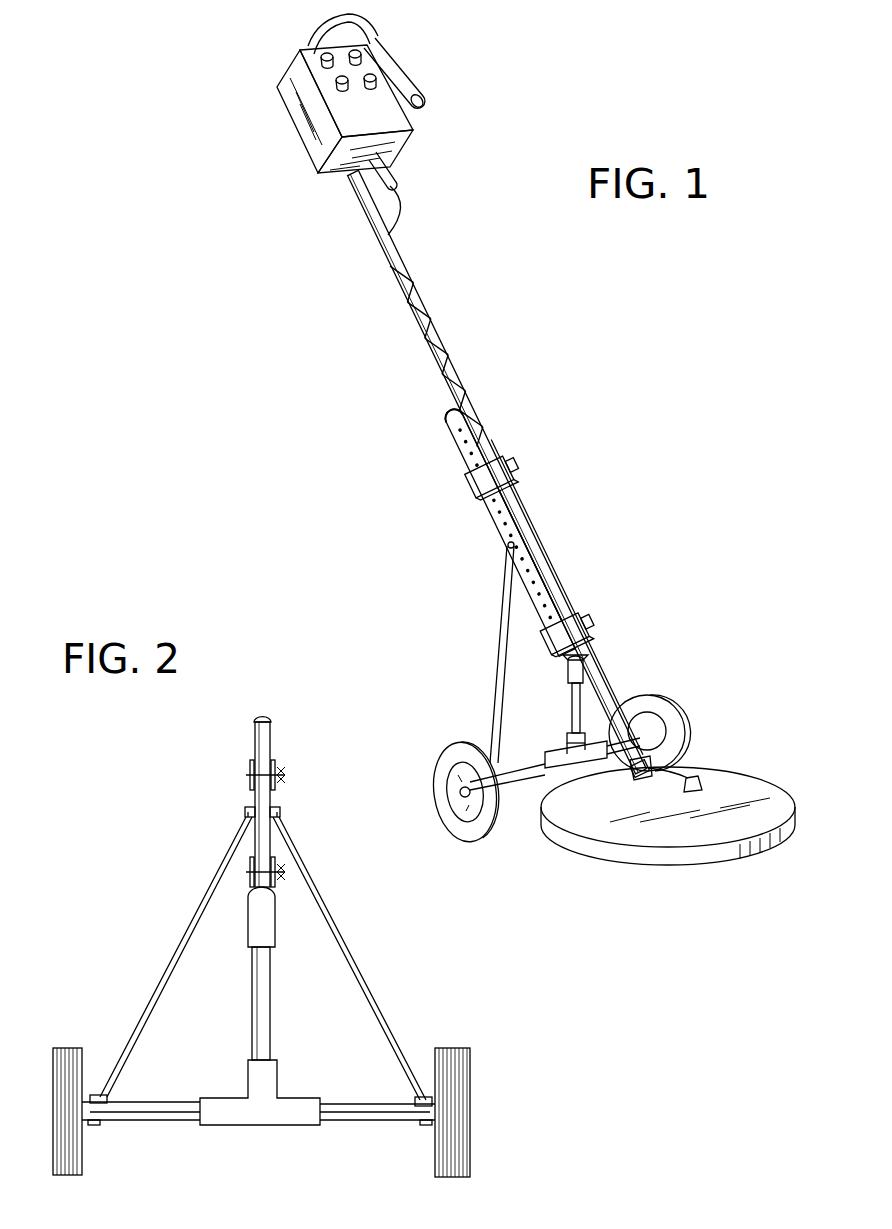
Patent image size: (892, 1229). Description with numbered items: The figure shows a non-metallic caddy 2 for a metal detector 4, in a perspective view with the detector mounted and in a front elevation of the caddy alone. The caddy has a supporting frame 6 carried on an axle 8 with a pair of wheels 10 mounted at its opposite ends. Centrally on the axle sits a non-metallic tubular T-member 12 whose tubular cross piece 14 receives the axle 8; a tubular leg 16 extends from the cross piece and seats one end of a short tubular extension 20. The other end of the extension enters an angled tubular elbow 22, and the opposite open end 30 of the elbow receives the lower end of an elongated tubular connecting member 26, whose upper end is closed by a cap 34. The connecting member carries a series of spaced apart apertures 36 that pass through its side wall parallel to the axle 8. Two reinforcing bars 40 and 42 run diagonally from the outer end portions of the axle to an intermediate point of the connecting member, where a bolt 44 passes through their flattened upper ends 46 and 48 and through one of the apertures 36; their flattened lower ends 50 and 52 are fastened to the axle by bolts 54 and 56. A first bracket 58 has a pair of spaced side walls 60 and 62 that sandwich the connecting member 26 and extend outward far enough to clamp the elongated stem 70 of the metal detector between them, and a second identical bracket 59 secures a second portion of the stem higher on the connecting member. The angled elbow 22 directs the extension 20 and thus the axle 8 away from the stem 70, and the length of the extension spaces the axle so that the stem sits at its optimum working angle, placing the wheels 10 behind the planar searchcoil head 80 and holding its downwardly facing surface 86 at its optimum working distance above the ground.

In FIG. 1, the caddy 2 is at (490, 510).
In FIG. 1, the metal detector 4 is at (437, 333).
In FIG. 1, the supporting frame 6 is at (508, 545).
In FIG. 1, the axle 8 is at (505, 777).
In FIG. 2, the axle 8 is at (360, 1118).
In FIG. 1, the wheels 10 is at (437, 793).
In FIG. 2, the wheels 10 is at (455, 1048).
In FIG. 1, the tubular T-member 12 is at (560, 752).
In FIG. 2, the tubular T-member 12 is at (245, 1125).
In FIG. 1, the tubular cross piece 14 is at (578, 770).
In FIG. 1, the tubular leg 16 is at (568, 737).
In FIG. 1, the tubular extension 20 is at (572, 700).
In FIG. 2, the tubular extension 20 is at (272, 975).
In FIG. 1, the tubular elbow 22 is at (578, 660).
In FIG. 2, the tubular elbow 22 is at (250, 920).
In FIG. 1, the tubular connecting member 26 is at (455, 440).
In FIG. 2, the tubular connecting member 26 is at (270, 740).
In FIG. 1, the open end of tubular elbow 30 is at (447, 413).
In FIG. 2, the cap 34 is at (265, 720).
In FIG. 1, the apertures 36 is at (478, 470).
In FIG. 1, the reinforcing bar 40 is at (497, 685).
In FIG. 2, the reinforcing bar 40 is at (172, 952).
In FIG. 2, the reinforcing bar 42 is at (360, 960).
In FIG. 2, the bolt 44 is at (248, 812).
In FIG. 2, the flattened upper end of reinforcing bar 46 is at (250, 808).
In FIG. 2, the flattened upper end of reinforcing bar 48 is at (275, 808).
In FIG. 2, the flattened lower end of reinforcing bar 50 is at (108, 1100).
In FIG. 2, the flattened lower end of reinforcing bar 52 is at (418, 1100).
In FIG. 2, the bolt 54 is at (95, 1124).
In FIG. 2, the bolt 56 is at (425, 1124).
In FIG. 1, the first bracket 58 is at (580, 617).
In FIG. 1, the second bracket 59 is at (505, 465).
In FIG. 2, the side wall 60 is at (250, 860).
In FIG. 2, the side wall 62 is at (270, 855).
In FIG. 1, the elongated stem 70 is at (470, 405).
In FIG. 1, the planar searchcoil head 80 is at (745, 865).
In FIG. 1, the downwardly facing surface 86 is at (648, 858).